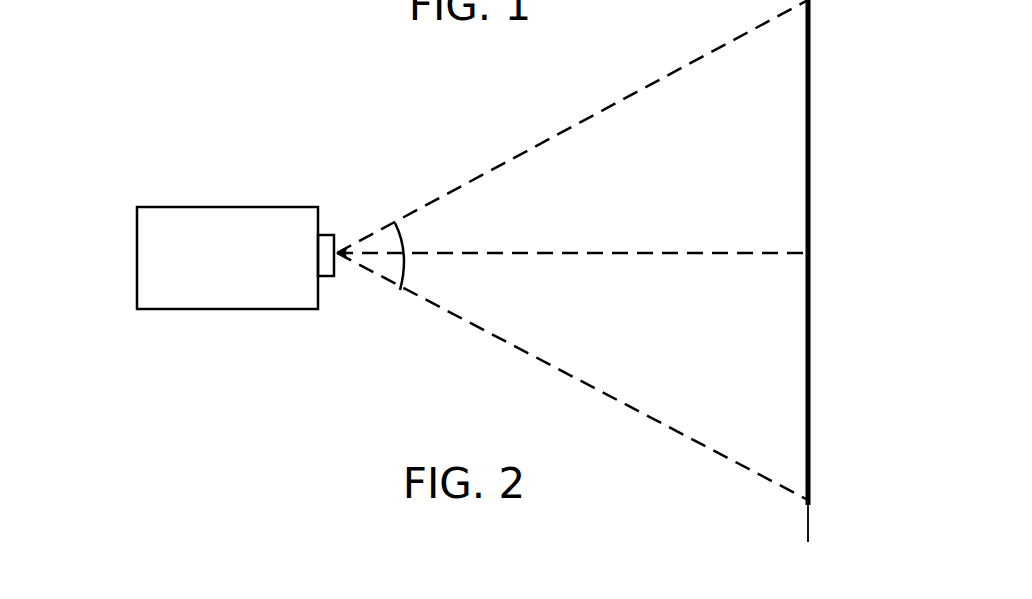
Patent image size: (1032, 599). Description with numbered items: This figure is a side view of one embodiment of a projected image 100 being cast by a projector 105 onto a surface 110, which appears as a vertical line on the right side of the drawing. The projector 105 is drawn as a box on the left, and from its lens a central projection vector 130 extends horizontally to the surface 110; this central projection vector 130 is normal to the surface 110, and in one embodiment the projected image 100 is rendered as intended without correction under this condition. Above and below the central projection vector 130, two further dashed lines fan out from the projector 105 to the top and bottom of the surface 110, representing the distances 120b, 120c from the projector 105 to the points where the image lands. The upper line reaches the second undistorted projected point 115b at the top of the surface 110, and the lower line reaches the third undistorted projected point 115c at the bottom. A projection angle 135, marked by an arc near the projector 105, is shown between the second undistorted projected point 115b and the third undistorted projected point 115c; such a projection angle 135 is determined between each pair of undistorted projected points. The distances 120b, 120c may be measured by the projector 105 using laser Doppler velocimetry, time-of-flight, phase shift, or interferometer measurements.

The projected image 100 is at (743, 148).
The projector 105 is at (235, 258).
The surface 110 is at (812, 132).
The second undistorted projected point 115b is at (812, 2).
The third undistorted projected point 115c is at (812, 505).
The distance 120b is at (515, 158).
The distance 120c is at (527, 358).
The central projection vector 130 is at (617, 253).
The projection angle 135 is at (405, 272).